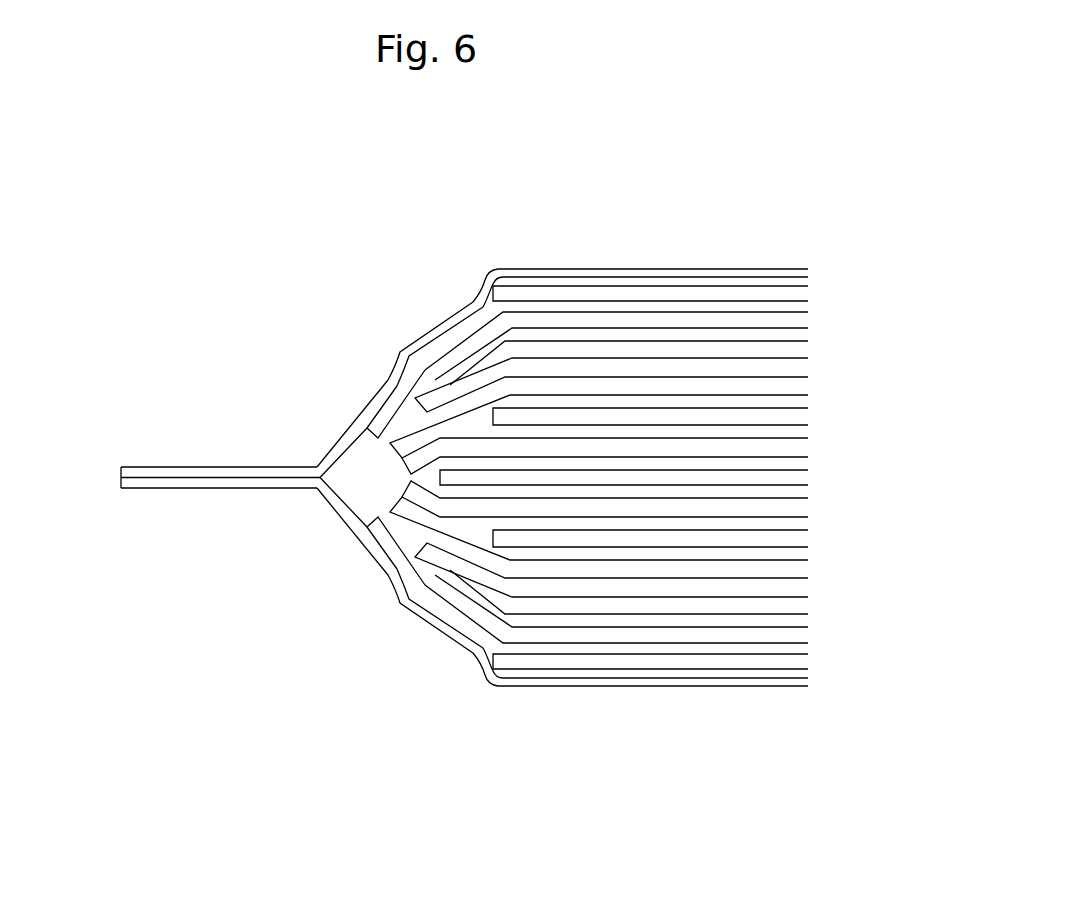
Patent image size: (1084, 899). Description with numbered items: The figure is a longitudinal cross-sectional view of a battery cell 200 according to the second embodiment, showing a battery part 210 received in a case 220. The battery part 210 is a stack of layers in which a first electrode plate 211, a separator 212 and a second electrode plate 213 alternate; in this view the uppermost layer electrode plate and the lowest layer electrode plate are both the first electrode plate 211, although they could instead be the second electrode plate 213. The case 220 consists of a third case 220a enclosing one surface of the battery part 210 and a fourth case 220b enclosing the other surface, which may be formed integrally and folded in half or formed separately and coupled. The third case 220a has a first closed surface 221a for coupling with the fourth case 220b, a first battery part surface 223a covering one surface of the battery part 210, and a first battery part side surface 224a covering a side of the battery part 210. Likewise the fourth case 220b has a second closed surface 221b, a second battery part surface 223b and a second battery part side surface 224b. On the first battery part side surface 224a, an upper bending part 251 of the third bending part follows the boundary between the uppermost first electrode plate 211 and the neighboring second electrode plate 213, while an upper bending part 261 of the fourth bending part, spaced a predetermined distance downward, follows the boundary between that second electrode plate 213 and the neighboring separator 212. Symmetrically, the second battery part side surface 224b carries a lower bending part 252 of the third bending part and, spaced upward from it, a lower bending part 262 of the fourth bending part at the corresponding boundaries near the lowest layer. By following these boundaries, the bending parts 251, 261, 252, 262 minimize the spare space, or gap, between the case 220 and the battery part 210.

The battery cell 200 is at (366, 246).
The battery part 210 is at (722, 210).
The first electrode plate 211 is at (571, 297).
The separator 212 is at (625, 322).
The second electrode plate 213 is at (680, 348).
The case 220 is at (120, 277).
The third case 220a is at (177, 456).
The fourth case 220b is at (154, 496).
The first closed surface 221a is at (215, 467).
The second closed surface 221b is at (228, 490).
The first battery part surface 223a is at (507, 268).
The second battery part surface 223b is at (507, 690).
The first battery part side surface 224a is at (427, 330).
The second battery part side surface 224b is at (427, 628).
The 3-1-th bending part 251 is at (478, 298).
The 3-2-th bending part 252 is at (478, 660).
The 4-1-th bending part 261 is at (395, 382).
The 4-2-th bending part 262 is at (392, 578).